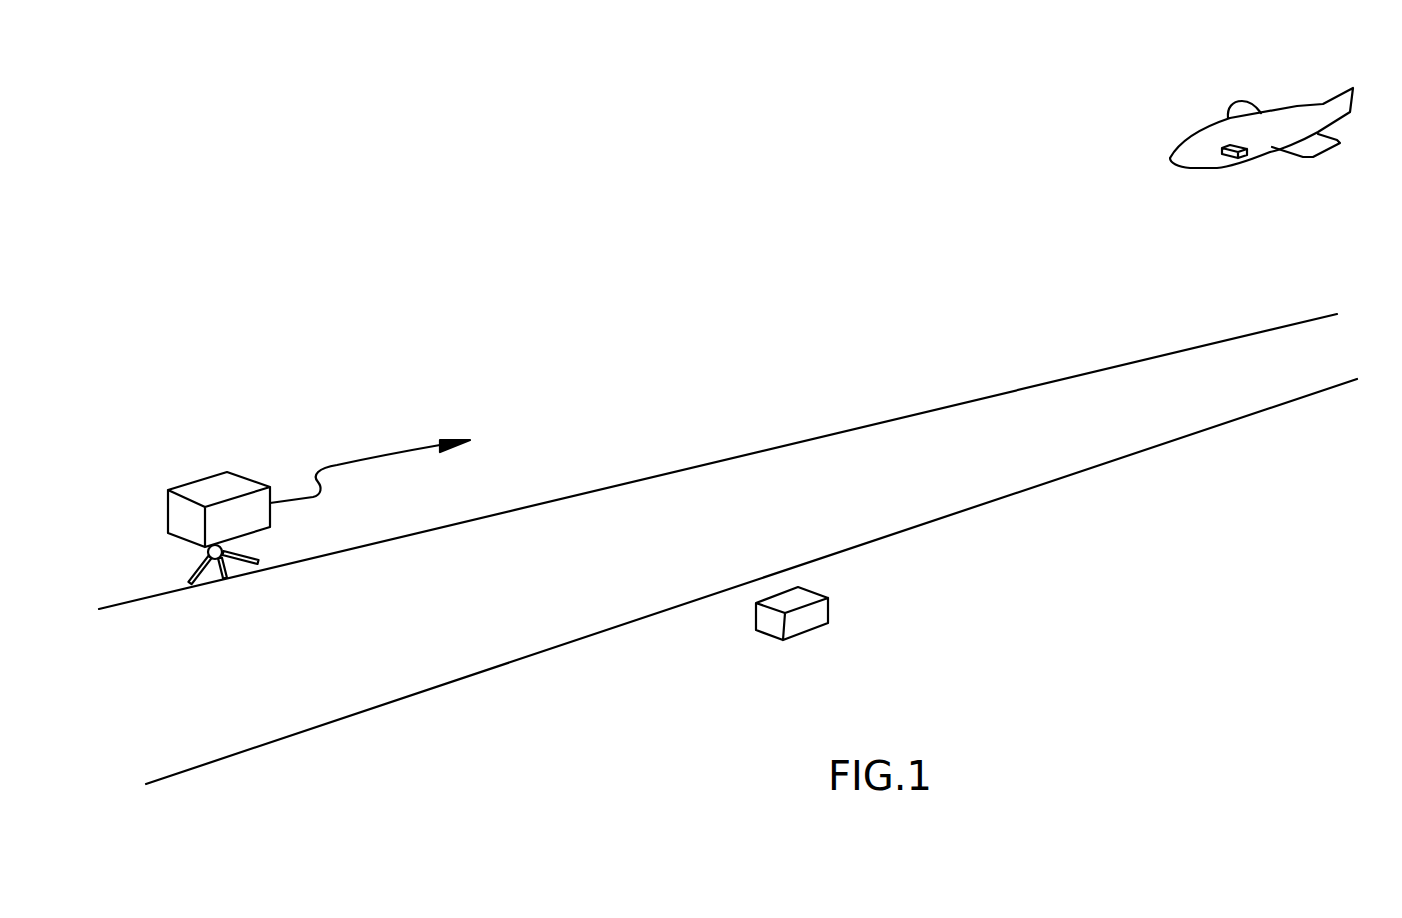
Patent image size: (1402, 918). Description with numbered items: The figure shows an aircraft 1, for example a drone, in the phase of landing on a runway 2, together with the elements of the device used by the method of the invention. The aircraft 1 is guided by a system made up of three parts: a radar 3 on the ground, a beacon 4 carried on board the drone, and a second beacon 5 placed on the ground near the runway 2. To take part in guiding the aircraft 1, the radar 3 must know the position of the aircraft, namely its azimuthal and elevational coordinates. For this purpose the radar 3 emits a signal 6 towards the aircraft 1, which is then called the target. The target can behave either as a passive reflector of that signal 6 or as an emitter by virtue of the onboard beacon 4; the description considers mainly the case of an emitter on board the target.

The aircraft 1 is at (1297, 105).
The runway 2 is at (1068, 448).
The radar 3 is at (212, 478).
The beacon on board the drone 4 is at (1240, 155).
The beacon on the ground 5 is at (805, 622).
The signal 6 is at (395, 452).